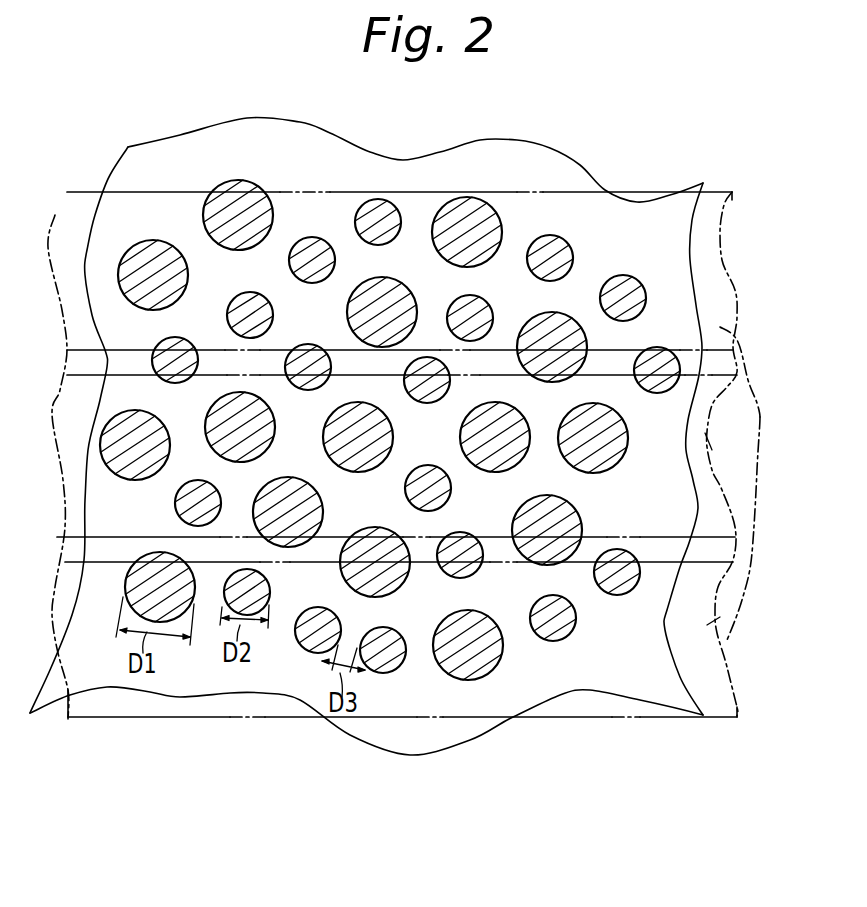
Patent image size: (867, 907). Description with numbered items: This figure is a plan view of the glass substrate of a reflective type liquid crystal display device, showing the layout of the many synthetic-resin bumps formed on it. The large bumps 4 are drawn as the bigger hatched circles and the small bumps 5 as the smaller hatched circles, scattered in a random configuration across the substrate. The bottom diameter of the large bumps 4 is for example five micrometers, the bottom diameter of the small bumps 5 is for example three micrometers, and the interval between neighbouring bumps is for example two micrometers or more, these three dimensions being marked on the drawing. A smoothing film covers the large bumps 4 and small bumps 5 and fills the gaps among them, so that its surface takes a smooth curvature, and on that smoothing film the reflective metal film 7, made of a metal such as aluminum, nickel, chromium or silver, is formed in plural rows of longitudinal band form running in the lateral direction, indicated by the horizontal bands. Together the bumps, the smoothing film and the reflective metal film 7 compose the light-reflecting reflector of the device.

The large bumps 4 is at (388, 283).
The small bumps 5 is at (317, 252).
The reflective metal film 7 is at (707, 440).